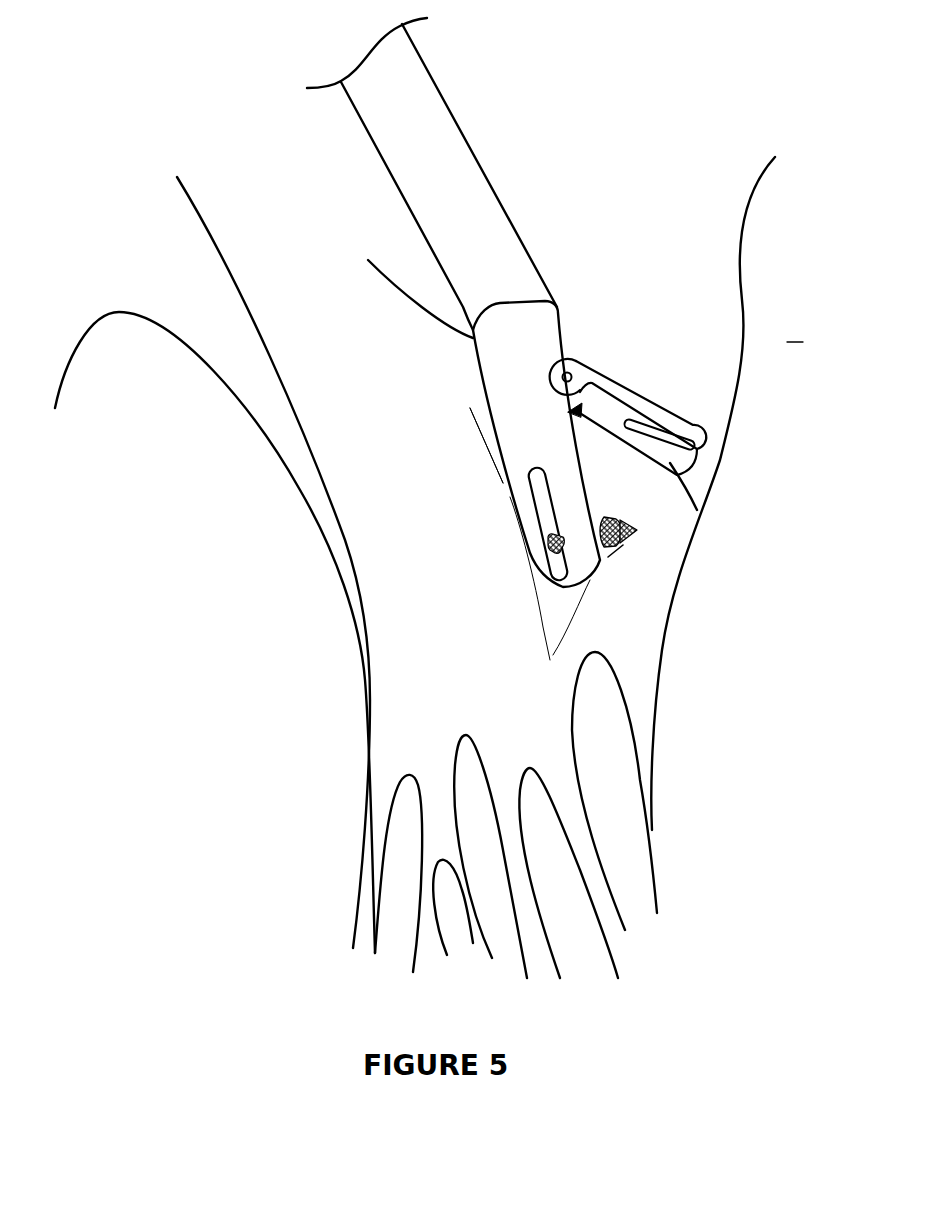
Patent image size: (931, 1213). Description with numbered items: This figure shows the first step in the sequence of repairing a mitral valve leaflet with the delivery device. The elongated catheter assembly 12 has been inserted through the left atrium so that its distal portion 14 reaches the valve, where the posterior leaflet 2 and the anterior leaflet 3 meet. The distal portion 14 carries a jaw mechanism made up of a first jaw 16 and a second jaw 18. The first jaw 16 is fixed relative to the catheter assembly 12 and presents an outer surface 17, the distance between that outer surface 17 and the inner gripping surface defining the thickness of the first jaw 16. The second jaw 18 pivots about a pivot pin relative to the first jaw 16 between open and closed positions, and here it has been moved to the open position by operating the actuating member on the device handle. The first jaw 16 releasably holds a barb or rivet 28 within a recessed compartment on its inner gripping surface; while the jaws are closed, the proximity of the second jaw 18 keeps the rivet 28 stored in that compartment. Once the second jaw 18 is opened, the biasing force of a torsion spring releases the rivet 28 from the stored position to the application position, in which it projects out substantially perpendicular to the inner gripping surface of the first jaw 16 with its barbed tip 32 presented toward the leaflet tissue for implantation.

The posterior leaflet 2 is at (405, 562).
The anterior leaflet 3 is at (795, 330).
The catheter assembly 12 is at (476, 176).
The distal portion 14 is at (507, 347).
The first jaw 16 is at (533, 450).
The outer surface 17 is at (520, 405).
The second jaw 18 is at (628, 397).
The rivet 28 is at (635, 530).
The barbed tip 32 is at (633, 530).